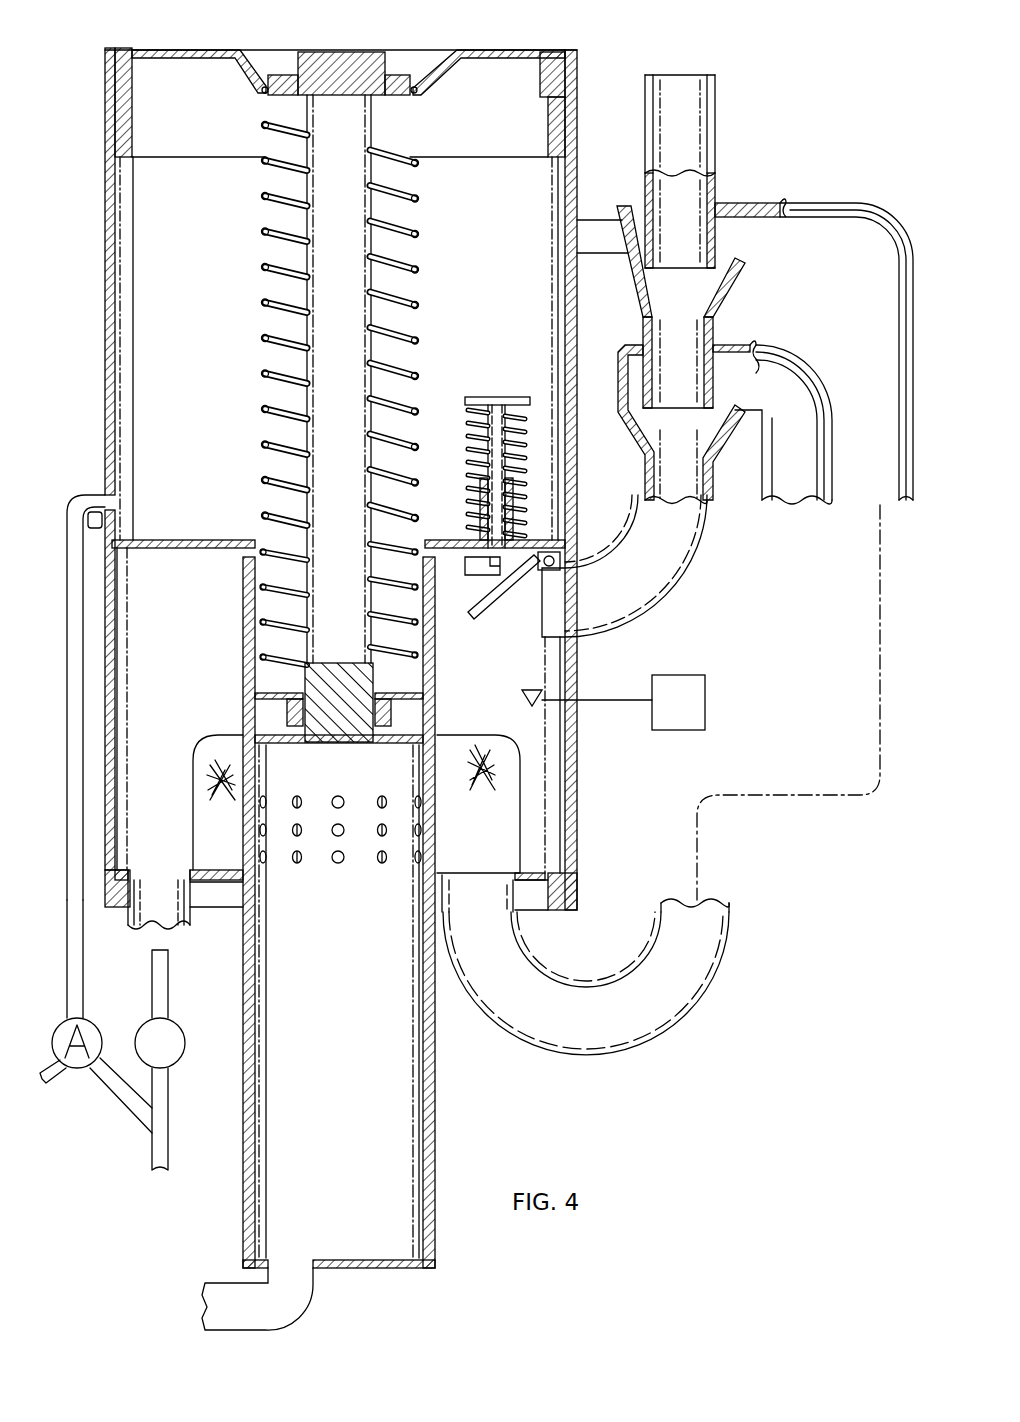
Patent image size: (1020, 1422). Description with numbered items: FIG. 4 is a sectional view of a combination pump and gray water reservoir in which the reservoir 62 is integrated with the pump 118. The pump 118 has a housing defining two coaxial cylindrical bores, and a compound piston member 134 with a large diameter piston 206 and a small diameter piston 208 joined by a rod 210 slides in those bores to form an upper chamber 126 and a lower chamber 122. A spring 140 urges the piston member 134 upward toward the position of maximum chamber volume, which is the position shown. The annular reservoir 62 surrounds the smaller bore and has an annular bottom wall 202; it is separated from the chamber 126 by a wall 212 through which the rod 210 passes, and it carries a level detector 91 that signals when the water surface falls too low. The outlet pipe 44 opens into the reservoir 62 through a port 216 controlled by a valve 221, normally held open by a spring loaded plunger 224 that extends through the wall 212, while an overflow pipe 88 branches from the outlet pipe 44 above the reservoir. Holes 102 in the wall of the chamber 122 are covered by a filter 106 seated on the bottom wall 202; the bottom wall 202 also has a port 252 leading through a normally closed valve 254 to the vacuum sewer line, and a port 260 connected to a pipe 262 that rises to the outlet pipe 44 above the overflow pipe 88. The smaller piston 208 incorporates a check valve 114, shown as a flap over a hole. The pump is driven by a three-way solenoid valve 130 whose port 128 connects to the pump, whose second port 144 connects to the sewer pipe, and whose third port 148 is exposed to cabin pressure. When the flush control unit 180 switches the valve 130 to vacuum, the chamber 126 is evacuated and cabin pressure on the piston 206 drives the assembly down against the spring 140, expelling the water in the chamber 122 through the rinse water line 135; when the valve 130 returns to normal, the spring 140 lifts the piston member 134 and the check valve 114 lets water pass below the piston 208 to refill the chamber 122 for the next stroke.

The pump 118 is at (88, 341).
The chamber 126 is at (205, 425).
The large diameter piston 206 is at (520, 50).
The spring 140 is at (415, 258).
The compound piston member 134 is at (252, 333).
The rod 210 is at (418, 338).
The wall 212 is at (185, 538).
The spring loaded plunger 224 is at (498, 399).
The chamber 122 is at (355, 1089).
The small diameter piston 208 is at (258, 716).
The check valve 114 is at (385, 757).
The filter 106 is at (192, 798).
The port 260 is at (480, 885).
The port 252 is at (160, 885).
The annular bottom wall 202 is at (535, 870).
The holes 102 is at (338, 862).
The rinse water line 135 is at (307, 1300).
The valve 221 is at (473, 592).
The port 216 is at (537, 608).
The level detector 91 is at (525, 700).
The flush control unit 180 is at (705, 705).
The outlet pipe 44 is at (715, 130).
The pipe 262 is at (829, 203).
The overflow pipe 88 is at (770, 345).
The reservoir 62 is at (65, 530).
The port 128 is at (123, 967).
The third port 148 is at (60, 1073).
The second port 144 is at (121, 1107).
The three-way solenoid valve 130 is at (132, 1013).
The normally closed valve 254 is at (187, 1042).